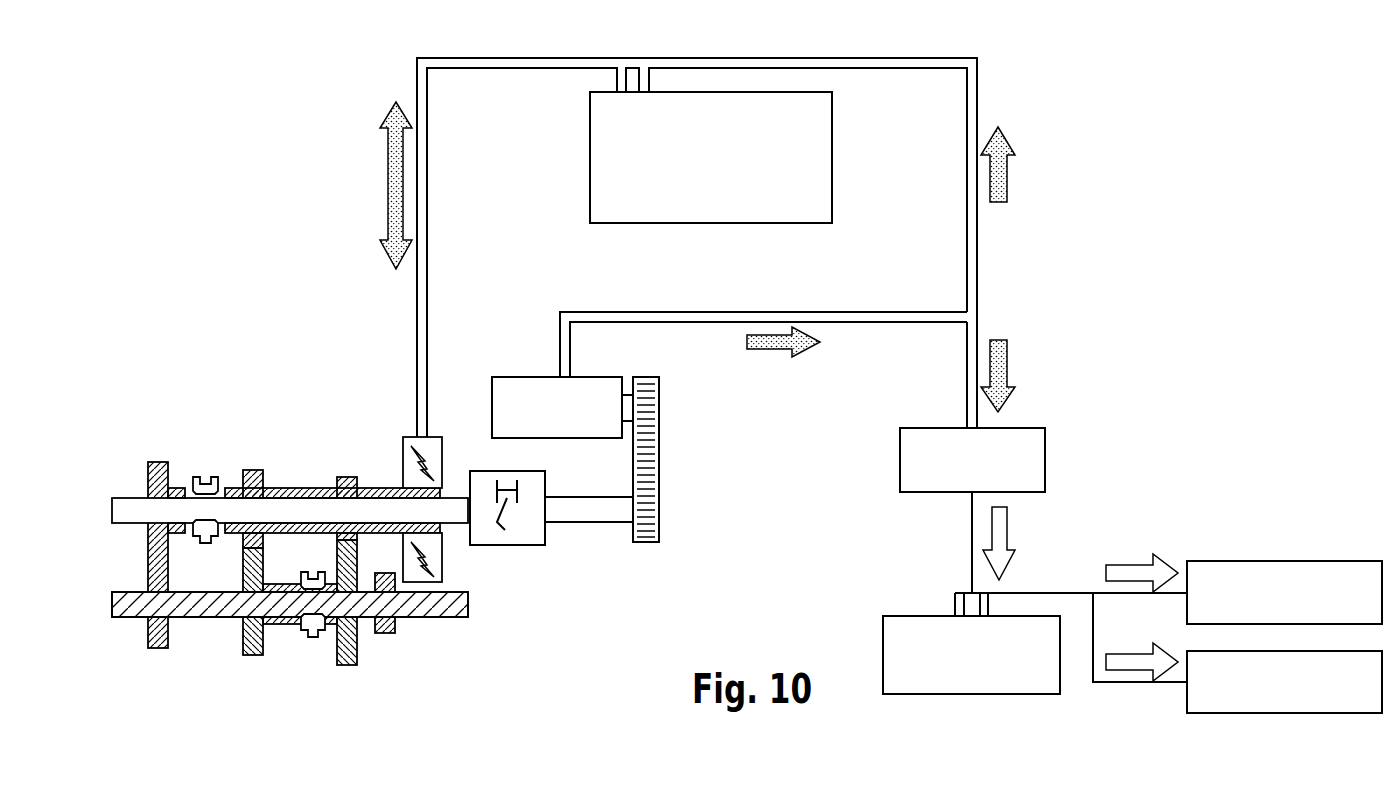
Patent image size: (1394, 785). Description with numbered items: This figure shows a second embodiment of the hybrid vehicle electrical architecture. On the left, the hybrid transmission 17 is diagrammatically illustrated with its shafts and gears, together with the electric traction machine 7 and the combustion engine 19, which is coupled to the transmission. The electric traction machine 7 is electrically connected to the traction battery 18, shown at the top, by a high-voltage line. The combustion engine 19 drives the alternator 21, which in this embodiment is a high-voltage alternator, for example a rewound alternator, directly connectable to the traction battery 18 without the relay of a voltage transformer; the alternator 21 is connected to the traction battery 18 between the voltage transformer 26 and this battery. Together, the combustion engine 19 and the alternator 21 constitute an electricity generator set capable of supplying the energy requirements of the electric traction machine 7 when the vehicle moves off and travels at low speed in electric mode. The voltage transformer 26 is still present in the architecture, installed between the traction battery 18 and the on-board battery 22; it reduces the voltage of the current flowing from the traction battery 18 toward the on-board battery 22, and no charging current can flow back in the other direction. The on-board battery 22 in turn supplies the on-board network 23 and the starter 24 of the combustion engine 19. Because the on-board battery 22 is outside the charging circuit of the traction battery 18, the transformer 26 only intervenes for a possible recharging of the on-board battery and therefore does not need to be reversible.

The hybrid transmission 17 is at (126, 438).
The electric traction machine 7 is at (435, 560).
The combustion engine 19 is at (526, 534).
The alternator 21 is at (575, 459).
The traction battery 18 is at (711, 157).
The voltage transformer 26 is at (972, 460).
The on-board battery 22 is at (971, 655).
The on-board network 23 is at (1284, 592).
The starter 24 is at (1284, 682).